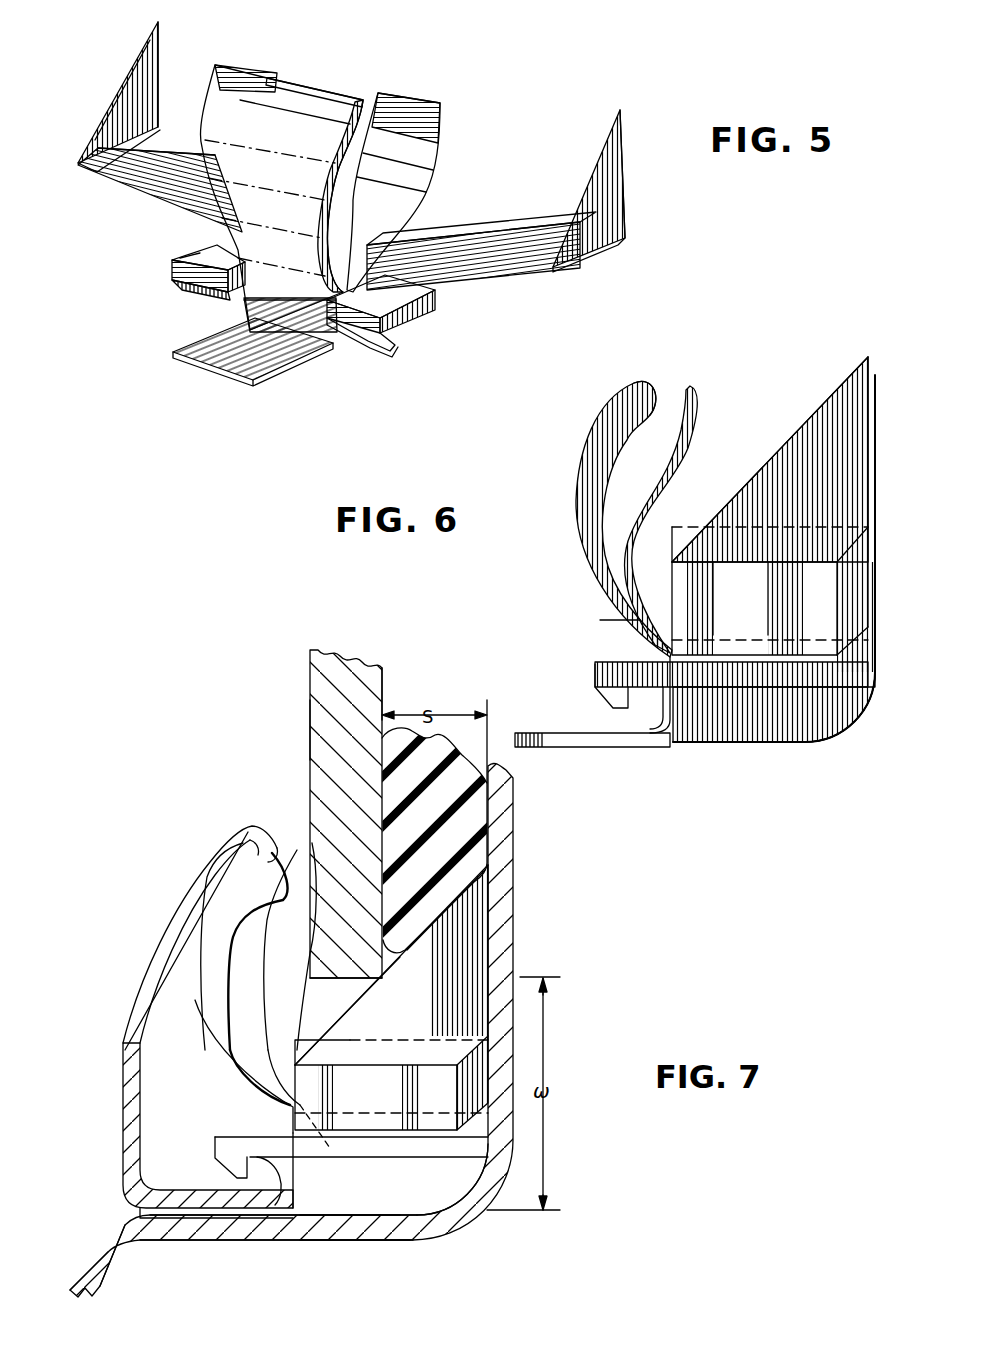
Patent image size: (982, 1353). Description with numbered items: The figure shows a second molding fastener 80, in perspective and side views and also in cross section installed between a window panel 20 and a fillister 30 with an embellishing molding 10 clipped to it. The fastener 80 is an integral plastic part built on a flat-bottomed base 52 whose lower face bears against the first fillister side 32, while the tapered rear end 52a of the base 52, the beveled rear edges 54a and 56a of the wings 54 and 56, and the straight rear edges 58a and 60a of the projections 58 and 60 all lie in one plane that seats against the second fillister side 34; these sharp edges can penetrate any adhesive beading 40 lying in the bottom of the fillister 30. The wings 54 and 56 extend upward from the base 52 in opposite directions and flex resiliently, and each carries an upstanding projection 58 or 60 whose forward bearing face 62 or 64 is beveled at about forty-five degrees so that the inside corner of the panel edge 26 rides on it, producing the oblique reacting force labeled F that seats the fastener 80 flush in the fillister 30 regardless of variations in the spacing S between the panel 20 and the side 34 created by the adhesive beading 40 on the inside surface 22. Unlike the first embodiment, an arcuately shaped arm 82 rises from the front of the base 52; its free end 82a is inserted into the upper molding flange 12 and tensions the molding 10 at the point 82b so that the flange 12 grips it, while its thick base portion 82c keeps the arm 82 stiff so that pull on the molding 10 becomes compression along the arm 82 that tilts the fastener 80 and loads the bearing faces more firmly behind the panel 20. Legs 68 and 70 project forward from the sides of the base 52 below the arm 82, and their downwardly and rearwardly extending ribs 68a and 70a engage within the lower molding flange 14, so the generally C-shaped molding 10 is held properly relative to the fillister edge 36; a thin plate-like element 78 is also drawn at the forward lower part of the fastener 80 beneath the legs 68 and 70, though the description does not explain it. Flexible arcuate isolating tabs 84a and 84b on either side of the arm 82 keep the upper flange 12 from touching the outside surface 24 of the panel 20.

In FIG. 7, the embellishing molding 10 is at (115, 1057).
In FIG. 7, the upper molding flange 12 is at (290, 857).
In FIG. 7, the lower molding flange 14 is at (266, 1220).
In FIG. 7, the window panel 20 is at (316, 648).
In FIG. 7, the inside major surface 22 is at (383, 688).
In FIG. 7, the outside major surface 24 is at (308, 733).
In FIG. 7, the edge 26 is at (325, 993).
In FIG. 7, the fillister 30 is at (523, 1231).
In FIG. 7, the first side 32 is at (345, 1240).
In FIG. 7, the second side 34 is at (500, 905).
In FIG. 7, the edge 36 is at (100, 1265).
In FIG. 7, the adhesive beading 40 is at (450, 857).
In FIG. 5, the base 52 is at (325, 325).
In FIG. 6, the base 52 is at (762, 745).
In FIG. 7, the base 52 is at (432, 1238).
In FIG. 6, the rear end 52a is at (840, 712).
In FIG. 7, the rear end 52a is at (468, 1172).
In FIG. 5, the wing 54 is at (165, 208).
In FIG. 5, the rear edge 54a is at (182, 148).
In FIG. 5, the wing 56 is at (500, 275).
In FIG. 6, the wing 56 is at (800, 592).
In FIG. 7, the wing 56 is at (420, 1037).
In FIG. 5, the rear edge 56a is at (510, 225).
In FIG. 6, the rear edge 56a is at (870, 562).
In FIG. 5, the projection 58 is at (140, 100).
In FIG. 5, the rear edge 58a is at (158, 52).
In FIG. 5, the projection 60 is at (617, 217).
In FIG. 6, the projection 60 is at (820, 470).
In FIG. 7, the projection 60 is at (470, 932).
In FIG. 6, the rear edge 60a is at (875, 403).
In FIG. 7, the rear edge 60a is at (490, 967).
In FIG. 5, the bearing face 62 is at (115, 95).
In FIG. 5, the bearing face 64 is at (607, 180).
In FIG. 6, the bearing face 64 is at (776, 445).
In FIG. 7, the bearing face 64 is at (444, 1037).
In FIG. 5, the leg 68 is at (205, 257).
In FIG. 5, the rib 68a is at (205, 292).
In FIG. 5, the leg 70 is at (420, 320).
In FIG. 6, the leg 70 is at (663, 672).
In FIG. 7, the leg 70 is at (322, 1152).
In FIG. 5, the rib 70a is at (360, 347).
In FIG. 6, the rib 70a is at (610, 703).
In FIG. 7, the rib 70a is at (218, 1166).
In FIG. 5, the solder tail 78 is at (235, 355).
In FIG. 6, the solder tail 78 is at (528, 733).
In FIG. 7, the solder tail 78 is at (170, 1220).
In FIG. 5, the second fastener 80 is at (150, 290).
In FIG. 6, the second fastener 80 is at (565, 603).
In FIG. 7, the second fastener 80 is at (496, 1030).
In FIG. 5, the arm 82 is at (281, 197).
In FIG. 6, the arm 82 is at (580, 478).
In FIG. 7, the arm 82 is at (165, 968).
In FIG. 5, the free end 82a is at (318, 85).
In FIG. 6, the free end 82a is at (634, 385).
In FIG. 7, the free end 82a is at (250, 855).
In FIG. 7, the point 82b is at (210, 880).
In FIG. 5, the base portion 82c is at (300, 310).
In FIG. 6, the base portion 82c is at (655, 648).
In FIG. 7, the base portion 82c is at (275, 1110).
In FIG. 5, the isolating tab 84a is at (243, 78).
In FIG. 5, the isolating tab 84b is at (405, 80).
In FIG. 6, the isolating tab 84b is at (692, 388).